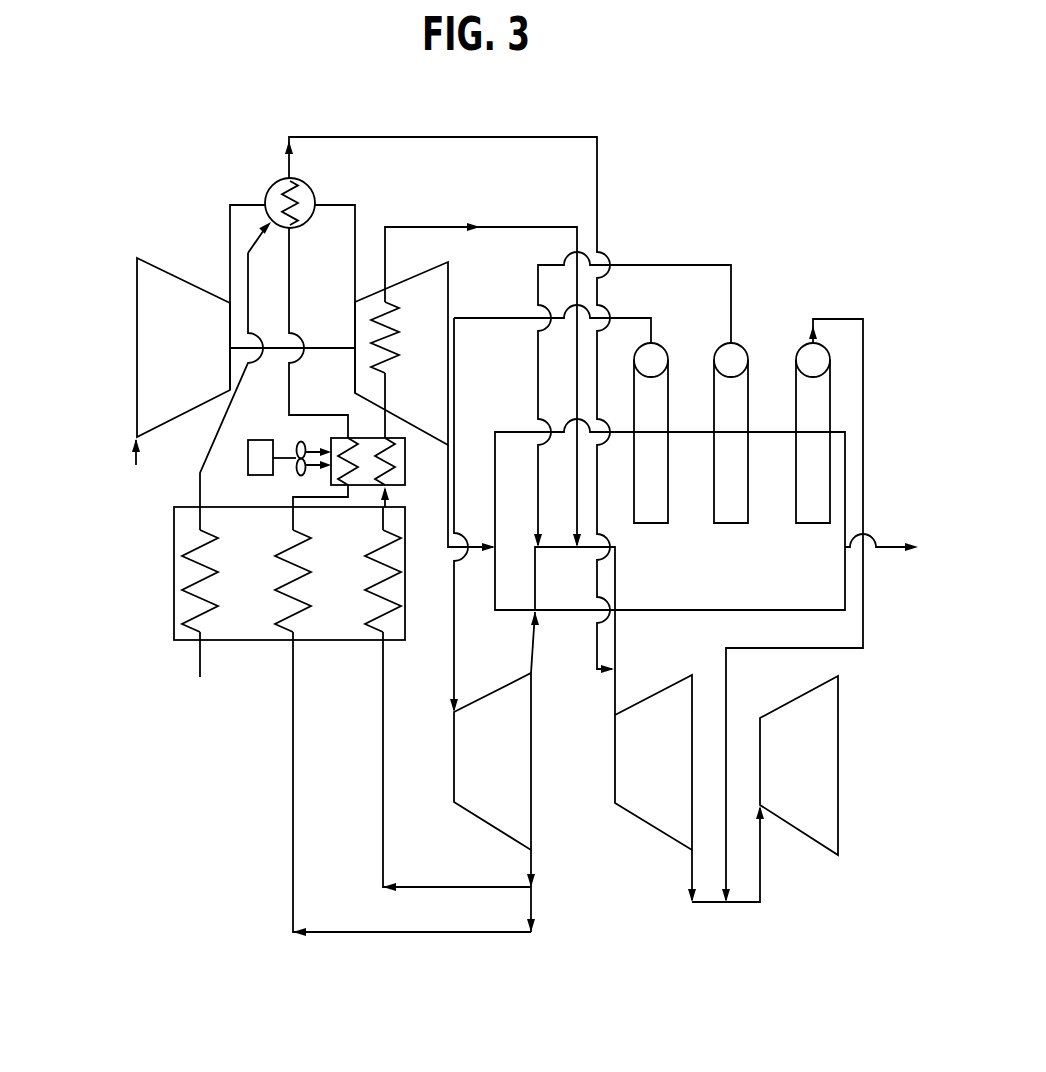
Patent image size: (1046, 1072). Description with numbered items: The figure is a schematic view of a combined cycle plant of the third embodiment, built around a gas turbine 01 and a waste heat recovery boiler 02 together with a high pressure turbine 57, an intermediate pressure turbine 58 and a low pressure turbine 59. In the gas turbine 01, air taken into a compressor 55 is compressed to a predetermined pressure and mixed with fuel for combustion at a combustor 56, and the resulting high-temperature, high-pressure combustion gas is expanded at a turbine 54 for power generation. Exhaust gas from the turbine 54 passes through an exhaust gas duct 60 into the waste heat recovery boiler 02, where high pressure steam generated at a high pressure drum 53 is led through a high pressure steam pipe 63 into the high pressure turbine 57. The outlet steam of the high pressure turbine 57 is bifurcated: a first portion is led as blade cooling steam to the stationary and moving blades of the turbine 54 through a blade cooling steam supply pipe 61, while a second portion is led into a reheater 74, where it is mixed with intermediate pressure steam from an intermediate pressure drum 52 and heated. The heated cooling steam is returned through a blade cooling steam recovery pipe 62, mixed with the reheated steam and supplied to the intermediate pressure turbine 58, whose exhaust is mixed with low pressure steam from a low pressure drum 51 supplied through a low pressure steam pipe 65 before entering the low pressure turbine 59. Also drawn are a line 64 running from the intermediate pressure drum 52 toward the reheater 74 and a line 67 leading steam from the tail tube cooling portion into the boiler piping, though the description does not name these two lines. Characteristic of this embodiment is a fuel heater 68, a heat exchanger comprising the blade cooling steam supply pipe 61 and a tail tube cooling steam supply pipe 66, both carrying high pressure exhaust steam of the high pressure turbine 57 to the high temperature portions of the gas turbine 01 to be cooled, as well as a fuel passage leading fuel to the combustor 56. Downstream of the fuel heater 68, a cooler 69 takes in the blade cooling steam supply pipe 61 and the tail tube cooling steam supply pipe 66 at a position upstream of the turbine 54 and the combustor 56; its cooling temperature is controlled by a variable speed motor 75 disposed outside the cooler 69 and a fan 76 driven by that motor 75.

The gas turbine 01 is at (317, 330).
The waste heat recovery boiler 02 is at (772, 476).
The low pressure drum 51 is at (828, 343).
The intermediate pressure drum 52 is at (740, 344).
The high pressure drum 53 is at (661, 344).
The turbine 54 is at (377, 300).
The compressor 55 is at (167, 273).
The combustor 56 is at (284, 177).
The high pressure turbine 57 is at (532, 800).
The intermediate pressure turbine 58 is at (648, 827).
The low pressure turbine 59 is at (807, 835).
The exhaust gas duct 60 is at (445, 550).
The blade cooling steam supply pipe 61 is at (382, 798).
The blade cooling steam recovery pipe 62 is at (517, 226).
The high pressure steam pipe 63 is at (452, 690).
The steam line 64 is at (618, 264).
The low pressure steam pipe 65 is at (826, 318).
The tail tube cooling steam supply pipe 66 is at (292, 848).
The tail tube cooling steam line 67 is at (370, 137).
The fuel heater 68 is at (174, 637).
The cooler 69 is at (331, 446).
The reheater 74 is at (616, 583).
The variable speed motor 75 is at (248, 460).
The fan 76 is at (297, 470).